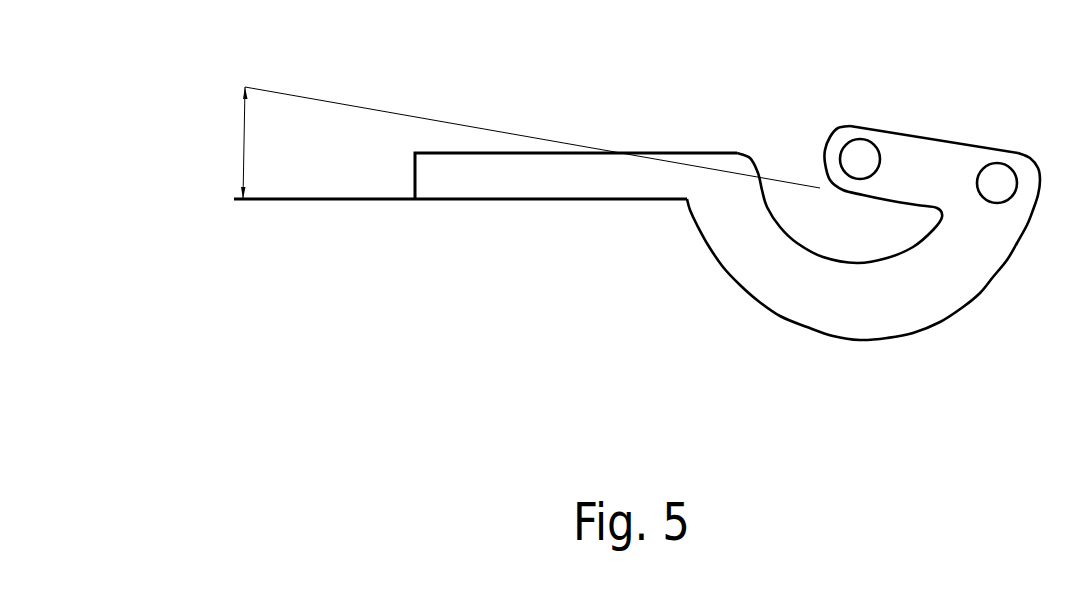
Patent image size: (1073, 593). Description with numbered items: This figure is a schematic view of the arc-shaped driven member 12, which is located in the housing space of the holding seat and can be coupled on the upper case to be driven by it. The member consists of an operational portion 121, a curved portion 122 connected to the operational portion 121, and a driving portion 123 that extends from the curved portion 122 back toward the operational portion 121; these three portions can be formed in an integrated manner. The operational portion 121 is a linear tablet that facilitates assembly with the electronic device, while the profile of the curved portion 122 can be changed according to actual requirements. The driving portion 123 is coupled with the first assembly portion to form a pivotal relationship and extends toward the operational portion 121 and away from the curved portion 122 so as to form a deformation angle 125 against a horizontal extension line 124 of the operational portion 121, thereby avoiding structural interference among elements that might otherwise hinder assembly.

The arc-shaped driven member 12 is at (726, 240).
The operational portion 121 is at (618, 188).
The curved portion 122 is at (855, 317).
The driving portion 123 is at (905, 144).
The horizontal extension line 124 is at (285, 201).
The deformation angle 125 is at (243, 143).